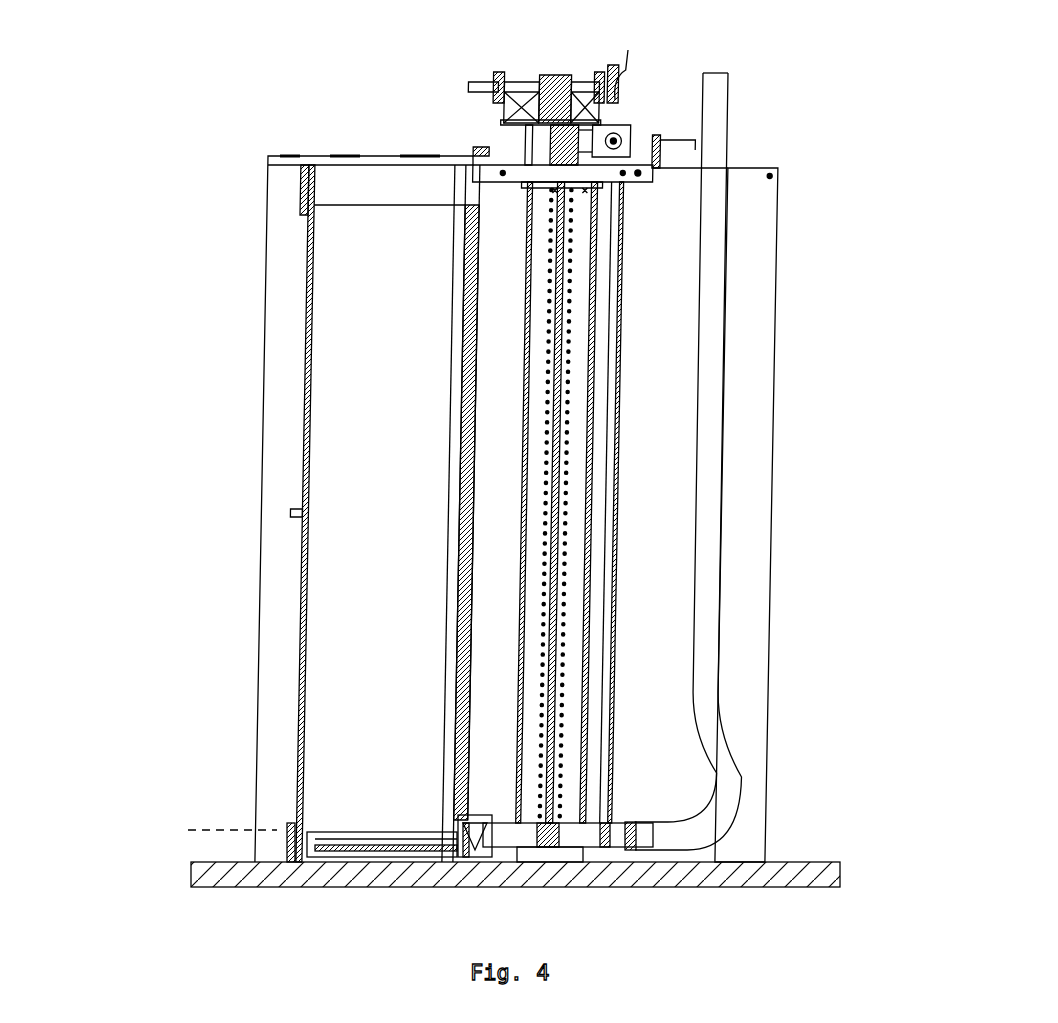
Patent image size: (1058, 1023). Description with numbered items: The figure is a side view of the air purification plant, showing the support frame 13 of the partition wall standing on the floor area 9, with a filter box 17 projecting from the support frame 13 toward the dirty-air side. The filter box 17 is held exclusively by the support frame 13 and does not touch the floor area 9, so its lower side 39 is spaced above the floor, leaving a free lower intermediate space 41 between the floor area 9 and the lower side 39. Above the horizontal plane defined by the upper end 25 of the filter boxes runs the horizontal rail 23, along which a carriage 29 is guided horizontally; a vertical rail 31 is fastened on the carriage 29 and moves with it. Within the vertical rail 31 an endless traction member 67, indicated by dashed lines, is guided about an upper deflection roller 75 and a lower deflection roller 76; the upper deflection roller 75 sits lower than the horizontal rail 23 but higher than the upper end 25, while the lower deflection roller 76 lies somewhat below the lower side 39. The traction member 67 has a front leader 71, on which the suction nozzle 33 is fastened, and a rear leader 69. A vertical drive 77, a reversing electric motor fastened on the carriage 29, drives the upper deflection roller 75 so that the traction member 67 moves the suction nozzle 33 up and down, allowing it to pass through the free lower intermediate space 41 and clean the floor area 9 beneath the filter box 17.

The floor area 9 is at (763, 877).
The support frame 13 is at (303, 352).
The filter box 17 is at (364, 625).
The horizontal rail 23 is at (508, 79).
The upper end of the filter boxes 25 is at (372, 203).
The carriage 29 is at (627, 75).
The vertical rail 31 is at (592, 592).
The suction nozzle 33 is at (347, 886).
The lower side of the filter boxes 39 is at (333, 833).
The free lower intermediate space 41 is at (227, 843).
The endless traction member 67 is at (569, 346).
The rear leader 69 is at (570, 490).
The front leader 71 is at (548, 438).
The upper deflection roller 75 is at (657, 140).
The lower deflection roller 76 is at (537, 862).
The vertical drive 77 is at (625, 134).